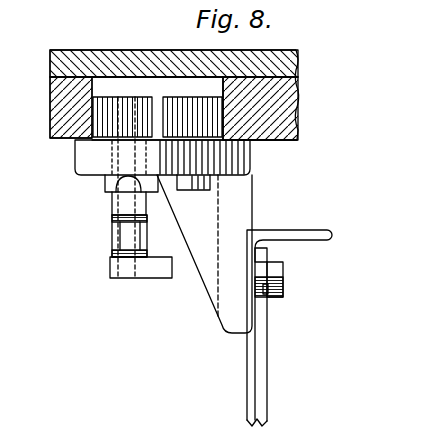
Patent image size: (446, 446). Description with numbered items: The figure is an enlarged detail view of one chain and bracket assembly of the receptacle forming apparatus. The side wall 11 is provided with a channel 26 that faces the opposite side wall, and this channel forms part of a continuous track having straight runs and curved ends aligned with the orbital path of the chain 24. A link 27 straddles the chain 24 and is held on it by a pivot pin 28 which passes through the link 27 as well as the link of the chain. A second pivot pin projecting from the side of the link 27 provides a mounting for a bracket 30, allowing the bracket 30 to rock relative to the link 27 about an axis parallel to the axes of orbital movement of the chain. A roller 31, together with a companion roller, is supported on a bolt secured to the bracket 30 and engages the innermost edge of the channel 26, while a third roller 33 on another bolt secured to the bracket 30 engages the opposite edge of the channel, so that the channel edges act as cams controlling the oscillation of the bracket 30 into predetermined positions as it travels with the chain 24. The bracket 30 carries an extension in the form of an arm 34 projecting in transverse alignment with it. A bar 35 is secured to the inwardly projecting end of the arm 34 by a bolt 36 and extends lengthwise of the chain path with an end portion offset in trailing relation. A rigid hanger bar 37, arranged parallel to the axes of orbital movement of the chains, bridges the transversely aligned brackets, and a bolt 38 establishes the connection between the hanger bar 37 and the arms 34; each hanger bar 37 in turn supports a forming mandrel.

The side wall 11 is at (123, 53).
The channel 26 is at (225, 88).
The third roller 33 is at (110, 110).
The roller 31 is at (191, 110).
The bracket 30 is at (242, 150).
The link 27 is at (161, 270).
The chain 24 is at (120, 237).
The pivot pin 28 is at (127, 262).
The arm 34 is at (236, 322).
The bar 35 is at (310, 233).
The hanger bar 37 is at (260, 376).
The bolt 36 is at (268, 294).
The bolt 38 is at (284, 271).